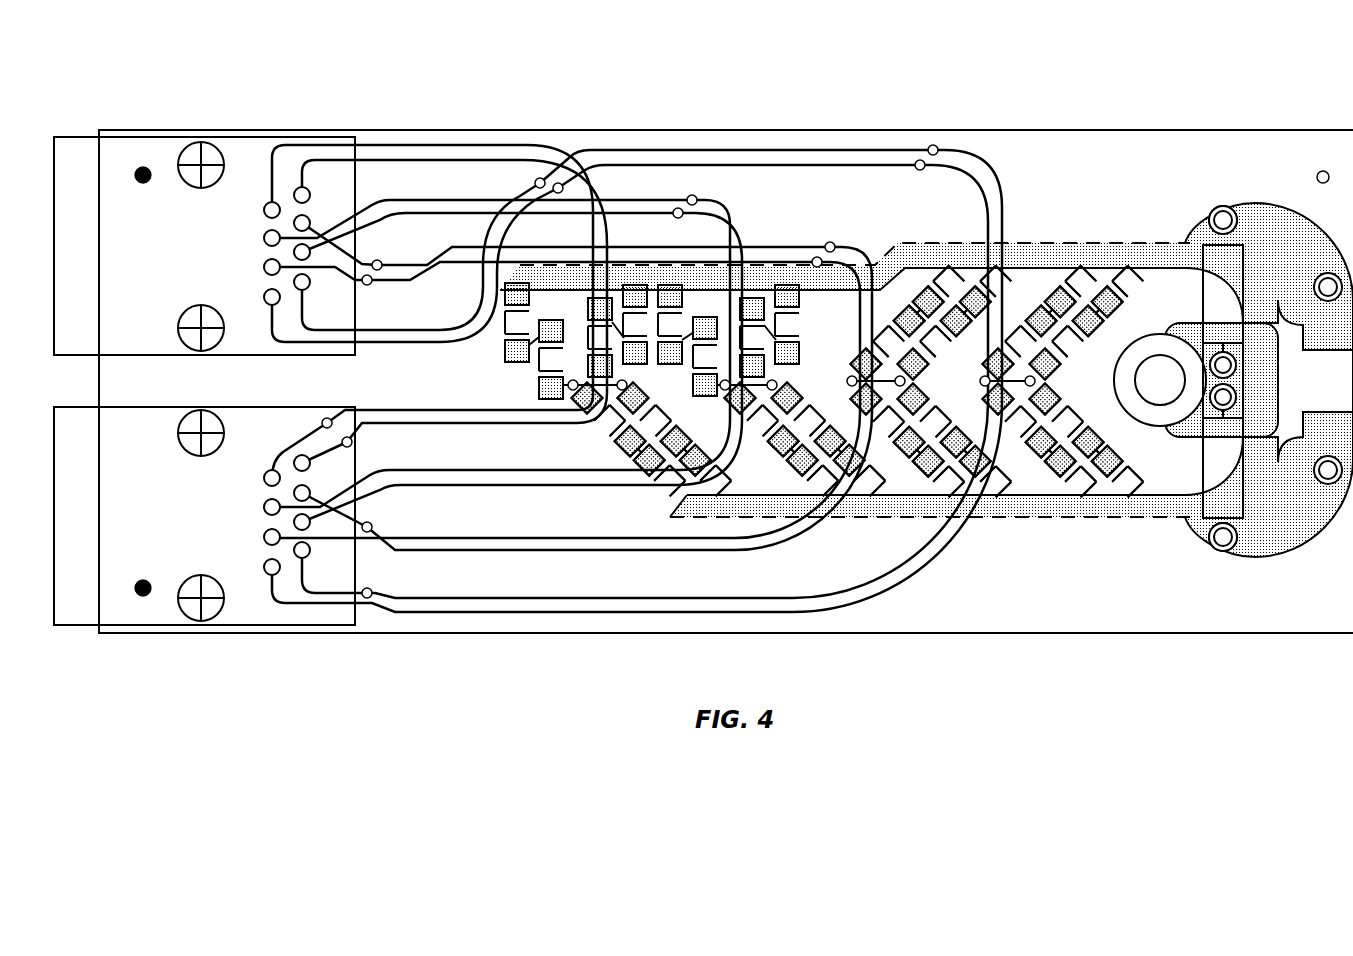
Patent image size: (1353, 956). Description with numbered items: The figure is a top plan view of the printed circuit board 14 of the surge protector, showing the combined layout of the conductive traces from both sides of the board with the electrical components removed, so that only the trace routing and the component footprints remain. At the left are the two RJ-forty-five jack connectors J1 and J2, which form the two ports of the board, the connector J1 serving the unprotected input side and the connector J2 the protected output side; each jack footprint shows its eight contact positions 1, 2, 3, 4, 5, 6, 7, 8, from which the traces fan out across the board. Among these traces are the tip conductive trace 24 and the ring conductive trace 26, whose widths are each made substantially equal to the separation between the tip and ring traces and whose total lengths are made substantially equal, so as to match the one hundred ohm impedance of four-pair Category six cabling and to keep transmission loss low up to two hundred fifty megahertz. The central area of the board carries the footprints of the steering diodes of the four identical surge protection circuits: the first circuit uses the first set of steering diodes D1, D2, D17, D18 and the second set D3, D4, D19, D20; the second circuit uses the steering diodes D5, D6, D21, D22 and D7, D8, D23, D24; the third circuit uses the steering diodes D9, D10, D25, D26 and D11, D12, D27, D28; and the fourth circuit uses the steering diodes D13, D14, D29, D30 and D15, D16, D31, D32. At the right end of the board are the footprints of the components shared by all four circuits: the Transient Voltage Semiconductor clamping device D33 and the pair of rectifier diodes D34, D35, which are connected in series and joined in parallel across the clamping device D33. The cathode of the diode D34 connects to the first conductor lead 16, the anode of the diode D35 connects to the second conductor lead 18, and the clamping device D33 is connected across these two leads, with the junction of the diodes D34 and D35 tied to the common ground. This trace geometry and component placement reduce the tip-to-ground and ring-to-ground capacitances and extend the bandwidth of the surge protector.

The printed circuit board 14 is at (703, 362).
The first conductor lead 16 is at (1205, 548).
The second conductor lead 18 is at (1201, 222).
The tip conductive trace 24 is at (862, 585).
The ring conductive trace 26 is at (888, 597).
The RJ-45 jack connector J1 is at (240, 130).
The RJ-45 jack connector J2 is at (240, 633).
The connector pin 1 is at (309, 418).
The connector pin 2 is at (263, 434).
The connector pin 3 is at (263, 404).
The connector pin 4 is at (309, 390).
The connector pin 5 is at (263, 375).
The connector pin 6 is at (309, 359).
The connector pin 7 is at (309, 330).
The connector pin 8 is at (263, 346).
The steering diode D1 is at (1086, 440).
The steering diode D2 is at (1090, 440).
The steering diode D3 is at (1035, 440).
The steering diode D4 is at (1052, 456).
The steering diode D5 is at (904, 440).
The steering diode D6 is at (921, 457).
The steering diode D7 is at (828, 439).
The steering diode D8 is at (841, 456).
The steering diode D9 is at (778, 439).
The steering diode D10 is at (796, 458).
The steering diode D11 is at (954, 440).
The steering diode D12 is at (969, 459).
The steering diode D13 is at (625, 439).
The steering diode D14 is at (646, 459).
The steering diode D15 is at (674, 439).
The steering diode D16 is at (692, 458).
The steering diode D17 is at (1101, 301).
The steering diode D18 is at (1086, 323).
The steering diode D19 is at (1039, 323).
The steering diode D20 is at (1054, 300).
The steering diode D21 is at (907, 323).
The steering diode D22 is at (924, 300).
The steering diode D23 is at (750, 313).
The steering diode D24 is at (787, 306).
The steering diode D25 is at (703, 336).
The steering diode D26 is at (667, 306).
The steering diode D27 is at (954, 323).
The steering diode D28 is at (973, 300).
The steering diode D29 is at (551, 337).
The steering diode D30 is at (517, 305).
The steering diode D31 is at (610, 326).
The steering diode D32 is at (635, 306).
The Transient Voltage Semiconductor clamping device D33 is at (1328, 436).
The rectifier diode D34 is at (1234, 488).
The rectifier diode D35 is at (1234, 275).